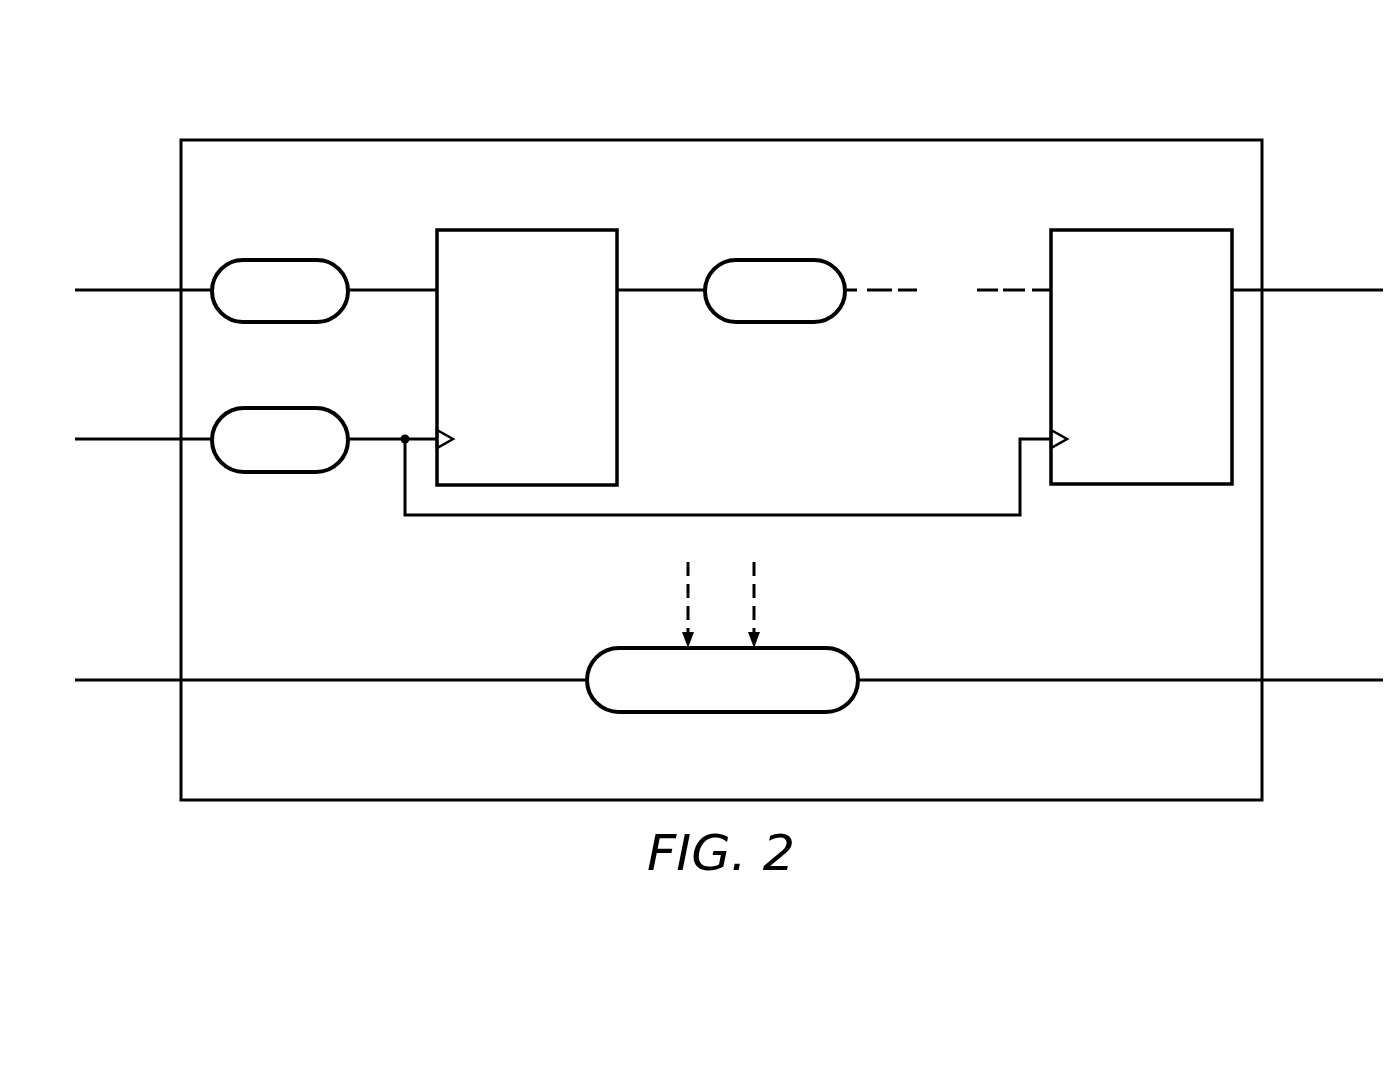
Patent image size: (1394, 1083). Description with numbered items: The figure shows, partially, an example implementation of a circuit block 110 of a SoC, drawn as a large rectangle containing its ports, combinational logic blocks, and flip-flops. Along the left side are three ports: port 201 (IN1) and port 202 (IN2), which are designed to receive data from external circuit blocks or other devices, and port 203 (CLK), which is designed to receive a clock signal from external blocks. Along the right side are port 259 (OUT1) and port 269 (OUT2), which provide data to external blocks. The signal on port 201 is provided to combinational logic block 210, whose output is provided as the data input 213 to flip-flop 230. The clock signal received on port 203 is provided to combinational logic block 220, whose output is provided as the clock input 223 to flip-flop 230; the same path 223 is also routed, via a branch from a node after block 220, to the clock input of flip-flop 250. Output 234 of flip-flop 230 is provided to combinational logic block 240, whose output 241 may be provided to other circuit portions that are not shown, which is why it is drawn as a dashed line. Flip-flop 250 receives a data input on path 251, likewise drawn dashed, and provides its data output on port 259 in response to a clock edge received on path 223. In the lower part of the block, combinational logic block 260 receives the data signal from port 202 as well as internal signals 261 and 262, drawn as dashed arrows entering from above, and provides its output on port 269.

The circuit block 110 is at (1053, 130).
The port IN1 201 is at (137, 290).
The port IN2 202 is at (138, 680).
The port CLK 203 is at (137, 439).
The combinational logic block 210 is at (306, 308).
The data input 213 is at (390, 290).
The combinational logic block 220 is at (306, 456).
The clock input 223 is at (390, 439).
The flip-flop 230 is at (554, 363).
The output of flip-flop 234 is at (677, 290).
The combinational logic block 240 is at (800, 307).
The output of combinational logic block 241 is at (882, 290).
The flip-flop 250 is at (1168, 363).
The data input path 251 is at (987, 290).
The port OUT1 259 is at (1322, 290).
The combinational logic block 260 is at (750, 697).
The internal signal 261 is at (688, 590).
The internal signal 262 is at (754, 590).
The port OUT2 269 is at (1322, 680).